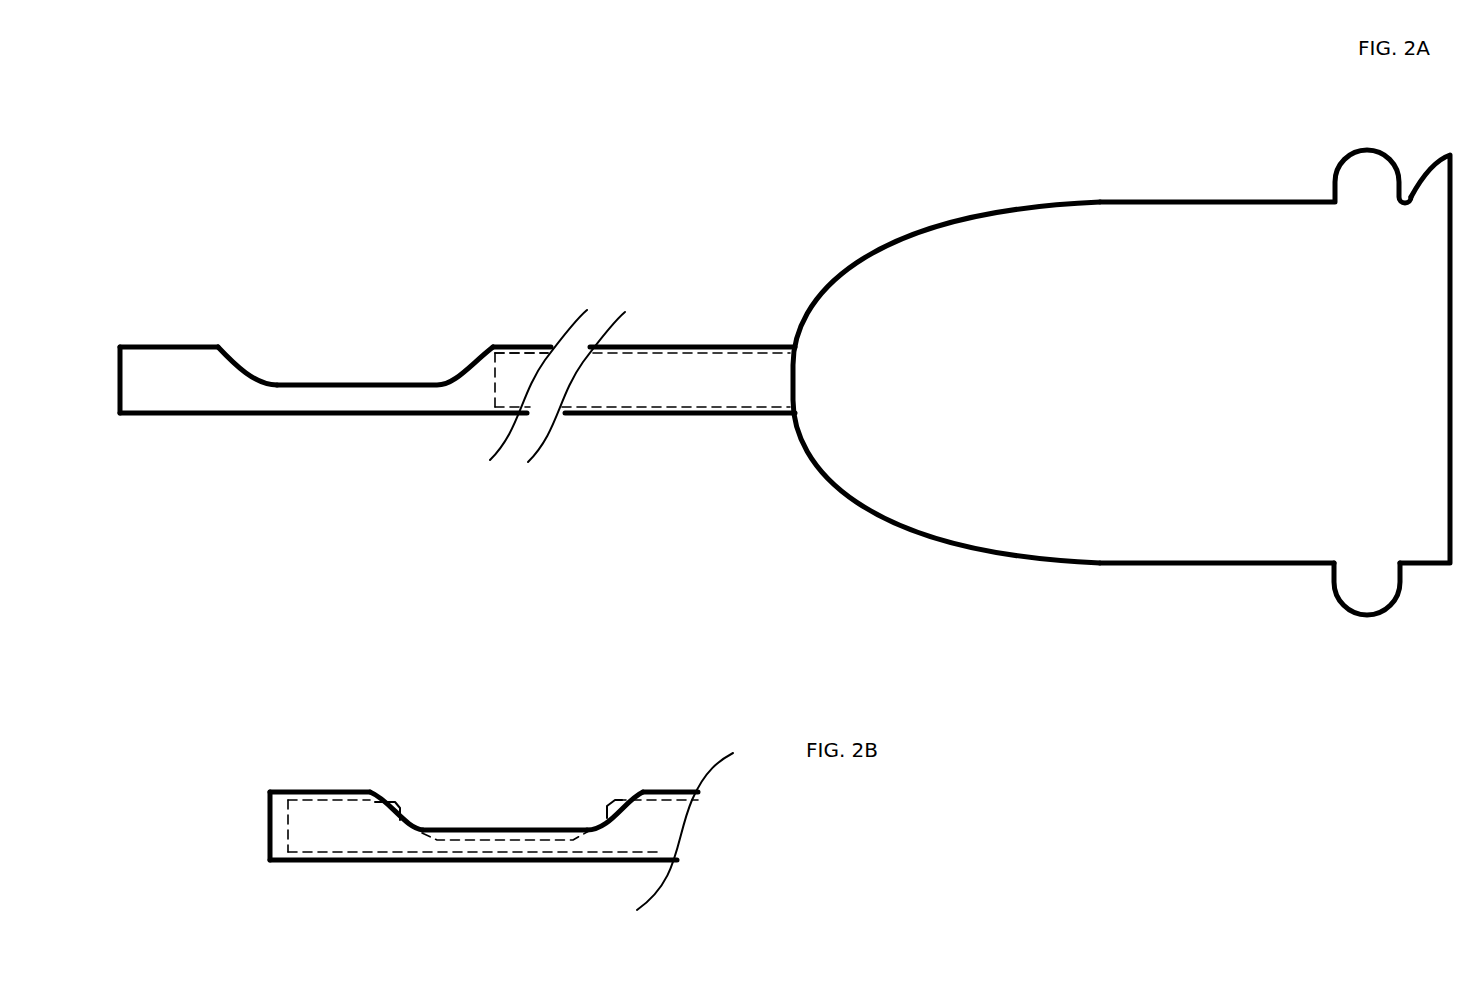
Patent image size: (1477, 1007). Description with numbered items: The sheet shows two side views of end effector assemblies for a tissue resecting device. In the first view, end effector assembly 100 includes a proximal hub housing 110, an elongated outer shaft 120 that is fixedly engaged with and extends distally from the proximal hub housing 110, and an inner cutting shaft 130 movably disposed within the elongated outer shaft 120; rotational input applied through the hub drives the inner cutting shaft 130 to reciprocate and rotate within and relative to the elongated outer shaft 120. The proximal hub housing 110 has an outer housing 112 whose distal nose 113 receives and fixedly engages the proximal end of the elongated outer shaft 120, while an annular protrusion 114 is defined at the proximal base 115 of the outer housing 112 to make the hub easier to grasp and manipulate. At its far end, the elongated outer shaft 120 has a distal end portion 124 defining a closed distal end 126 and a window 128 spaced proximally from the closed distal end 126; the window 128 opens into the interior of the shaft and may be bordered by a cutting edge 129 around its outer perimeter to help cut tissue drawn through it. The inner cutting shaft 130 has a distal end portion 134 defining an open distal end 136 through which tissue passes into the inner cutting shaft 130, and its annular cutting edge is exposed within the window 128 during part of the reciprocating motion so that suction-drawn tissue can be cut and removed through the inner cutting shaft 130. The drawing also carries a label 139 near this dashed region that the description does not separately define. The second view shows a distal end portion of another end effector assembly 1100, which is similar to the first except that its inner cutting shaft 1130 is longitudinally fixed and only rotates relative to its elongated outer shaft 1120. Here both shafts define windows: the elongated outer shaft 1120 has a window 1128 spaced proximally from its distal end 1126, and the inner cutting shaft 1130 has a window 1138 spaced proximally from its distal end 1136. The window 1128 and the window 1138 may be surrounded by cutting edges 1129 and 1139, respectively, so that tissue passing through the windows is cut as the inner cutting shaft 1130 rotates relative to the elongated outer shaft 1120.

In FIG. 2A, the end effector assembly 100 is at (790, 177).
In FIG. 2A, the proximal hub housing 110 is at (1040, 285).
In FIG. 2A, the outer housing 112 is at (1070, 540).
In FIG. 2A, the distal nose 113 is at (830, 432).
In FIG. 2A, the annular protrusion 114 is at (1360, 600).
In FIG. 2A, the proximal base 115 is at (1422, 553).
In FIG. 2A, the elongated outer shaft 120 is at (622, 416).
In FIG. 2A, the distal end portion 124 is at (175, 347).
In FIG. 2A, the closed distal end 126 is at (115, 392).
In FIG. 2A, the window 128 is at (385, 382).
In FIG. 2A, the cutting edge 129 is at (258, 372).
In FIG. 2A, the inner cutting shaft 130 is at (662, 354).
In FIG. 2A, the distal end portion 134 is at (530, 347).
In FIG. 2A, the open distal end 136 is at (495, 392).
In FIG. 2A, the cavity 139 is at (495, 363).
In FIG. 2B, the end effector assembly 1100 is at (553, 747).
In FIG. 2B, the elongated outer shaft 1120 is at (682, 792).
In FIG. 2B, the distal end 1126 is at (270, 808).
In FIG. 2B, the window 1128 is at (537, 815).
In FIG. 2B, the cutting edge 1129 is at (477, 830).
In FIG. 2B, the inner cutting shaft 1130 is at (660, 853).
In FIG. 2B, the distal end 1136 is at (287, 820).
In FIG. 2B, the window 1138 is at (410, 815).
In FIG. 2B, the cutting edge 1139 is at (507, 828).